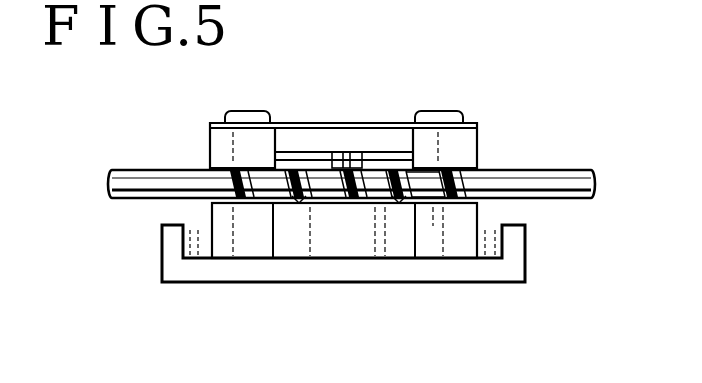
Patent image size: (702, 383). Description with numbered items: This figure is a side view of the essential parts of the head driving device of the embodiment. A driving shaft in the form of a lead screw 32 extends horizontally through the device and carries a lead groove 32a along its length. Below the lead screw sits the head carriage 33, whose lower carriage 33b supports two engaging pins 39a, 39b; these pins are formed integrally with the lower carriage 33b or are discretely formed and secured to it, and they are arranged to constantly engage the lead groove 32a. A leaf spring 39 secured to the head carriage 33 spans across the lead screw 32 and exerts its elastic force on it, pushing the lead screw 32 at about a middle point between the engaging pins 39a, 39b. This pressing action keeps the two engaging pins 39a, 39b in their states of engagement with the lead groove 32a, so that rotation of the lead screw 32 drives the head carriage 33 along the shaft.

The driving shaft (lead screw) 32 is at (552, 180).
The lead groove 32a is at (450, 197).
The head carriage 33 is at (203, 283).
The lower carriage 33b is at (337, 242).
The leaf spring 39 is at (350, 165).
The engaging pin 39a is at (300, 200).
The engaging pin 39b is at (403, 197).